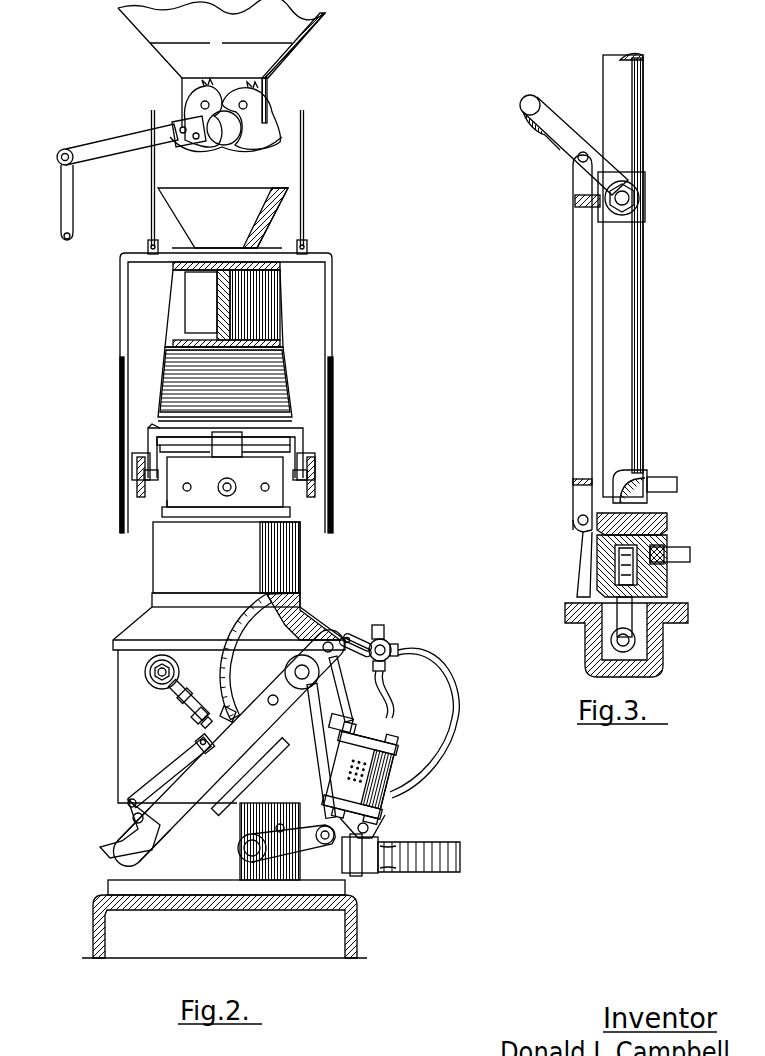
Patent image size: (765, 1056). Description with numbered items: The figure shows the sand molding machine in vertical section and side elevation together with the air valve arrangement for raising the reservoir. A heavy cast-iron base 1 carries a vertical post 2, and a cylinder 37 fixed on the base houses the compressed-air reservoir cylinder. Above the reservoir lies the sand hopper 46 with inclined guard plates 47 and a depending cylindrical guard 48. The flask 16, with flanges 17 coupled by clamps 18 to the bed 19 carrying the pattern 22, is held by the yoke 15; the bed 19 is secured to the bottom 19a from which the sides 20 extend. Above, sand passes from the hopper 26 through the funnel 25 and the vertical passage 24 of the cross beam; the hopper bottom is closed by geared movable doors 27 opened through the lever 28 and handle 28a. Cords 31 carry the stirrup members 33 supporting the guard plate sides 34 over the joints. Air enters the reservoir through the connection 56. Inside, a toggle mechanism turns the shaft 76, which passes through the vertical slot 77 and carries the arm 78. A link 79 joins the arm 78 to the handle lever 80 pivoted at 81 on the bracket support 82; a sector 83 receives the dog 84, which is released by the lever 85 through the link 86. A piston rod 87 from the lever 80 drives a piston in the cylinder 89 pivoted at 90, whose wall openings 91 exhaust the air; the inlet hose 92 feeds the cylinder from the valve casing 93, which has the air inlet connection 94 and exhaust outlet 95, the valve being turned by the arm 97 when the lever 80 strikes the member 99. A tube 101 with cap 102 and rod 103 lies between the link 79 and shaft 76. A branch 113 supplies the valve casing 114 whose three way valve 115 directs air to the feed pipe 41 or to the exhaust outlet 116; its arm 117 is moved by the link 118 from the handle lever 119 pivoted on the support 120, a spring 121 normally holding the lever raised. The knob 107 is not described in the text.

In FIG. 2, the base 1 is at (213, 902).
In FIG. 3, the base 1 is at (665, 655).
In FIG. 3, the post 2 is at (632, 370).
In FIG. 2, the yoke 15 is at (139, 488).
In FIG. 2, the flask 16 is at (168, 498).
In FIG. 2, the flanges 17 is at (250, 449).
In FIG. 2, the clamps 18 is at (225, 461).
In FIG. 2, the bed 19 is at (270, 437).
In FIG. 2, the bottom 19a is at (150, 428).
In FIG. 2, the sides 20 is at (148, 447).
In FIG. 2, the pattern 22 is at (282, 267).
In FIG. 2, the vertical passage 24 is at (245, 313).
In FIG. 2, the funnel 25 is at (272, 222).
In FIG. 2, the hopper 26 is at (270, 70).
In FIG. 2, the movable doors 27 is at (240, 150).
In FIG. 2, the lever 28 is at (126, 147).
In FIG. 2, the handle 28a is at (62, 190).
In FIG. 2, the cords or cables 31 is at (157, 160).
In FIG. 2, the stirrup members 33 is at (123, 275).
In FIG. 2, the guard plate sides 34 is at (119, 410).
In FIG. 2, the cylinder 37 is at (172, 880).
In FIG. 3, the feed pipe 41 is at (618, 617).
In FIG. 2, the sand hopper 46 is at (292, 562).
In FIG. 2, the inclined guard plates 47 is at (152, 624).
In FIG. 2, the cylindrical guard 48 is at (117, 696).
In FIG. 2, the connection 56 is at (418, 874).
In FIG. 2, the shaft 76 is at (252, 862).
In FIG. 2, the vertical slot 77 is at (236, 836).
In FIG. 2, the arm 78 is at (312, 845).
In FIG. 2, the link 79 is at (336, 732).
In FIG. 2, the handle lever 80 is at (186, 800).
In FIG. 2, the pivot 81 is at (302, 680).
In FIG. 2, the bracket support 82 is at (268, 664).
In FIG. 2, the sector 83 is at (246, 617).
In FIG. 2, the dog 84 is at (226, 712).
In FIG. 2, the lever 85 is at (112, 840).
In FIG. 2, the link 86 is at (154, 786).
In FIG. 2, the piston rod 87 is at (336, 680).
In FIG. 2, the cylinder 89 is at (372, 746).
In FIG. 2, the pivotal connection 90 is at (370, 829).
In FIG. 2, the openings 91 is at (372, 772).
In FIG. 2, the inlet hose 92 is at (387, 720).
In FIG. 2, the valve casing 93 is at (393, 647).
In FIG. 2, the air inlet connection 94 is at (457, 706).
In FIG. 2, the exhaust outlet 95 is at (385, 630).
In FIG. 2, the arm 97 is at (380, 628).
In FIG. 2, the member 99 is at (358, 642).
In FIG. 2, the tube 101 is at (236, 770).
In FIG. 2, the cap 102 is at (200, 726).
In FIG. 2, the rod 103 is at (186, 710).
In FIG. 2, the knob 107 is at (160, 690).
In FIG. 3, the branch 113 is at (660, 476).
In FIG. 3, the valve casing 114 is at (650, 530).
In FIG. 3, the three way valve 115 is at (608, 545).
In FIG. 3, the exhaust outlet 116 is at (680, 556).
In FIG. 3, the arm 117 is at (582, 534).
In FIG. 3, the link 118 is at (574, 408).
In FIG. 3, the handle lever 119 is at (553, 132).
In FIG. 3, the support 120 is at (640, 192).
In FIG. 3, the spring 121 is at (585, 205).